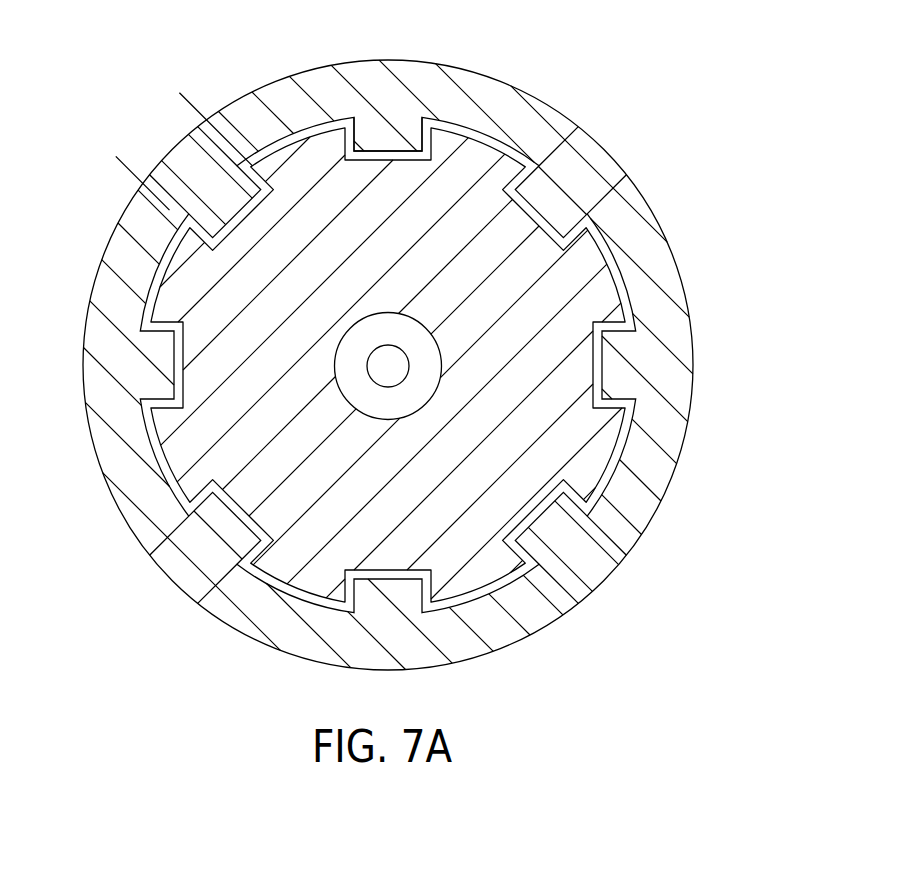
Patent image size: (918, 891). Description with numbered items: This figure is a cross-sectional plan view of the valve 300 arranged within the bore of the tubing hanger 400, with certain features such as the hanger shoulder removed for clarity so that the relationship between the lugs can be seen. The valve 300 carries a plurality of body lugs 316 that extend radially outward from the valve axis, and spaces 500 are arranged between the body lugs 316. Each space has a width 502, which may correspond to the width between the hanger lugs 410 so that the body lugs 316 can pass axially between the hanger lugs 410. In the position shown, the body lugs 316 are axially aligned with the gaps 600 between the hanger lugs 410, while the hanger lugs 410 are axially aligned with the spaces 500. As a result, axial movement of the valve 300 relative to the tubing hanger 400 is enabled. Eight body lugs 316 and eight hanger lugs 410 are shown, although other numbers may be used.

The valve 300 is at (272, 275).
The body lugs 316 is at (473, 152).
The tubing hanger 400 is at (617, 121).
The hanger lugs 410 is at (566, 198).
The spaces 500 is at (396, 174).
The width 502 is at (124, 162).
The gaps 600 is at (633, 283).